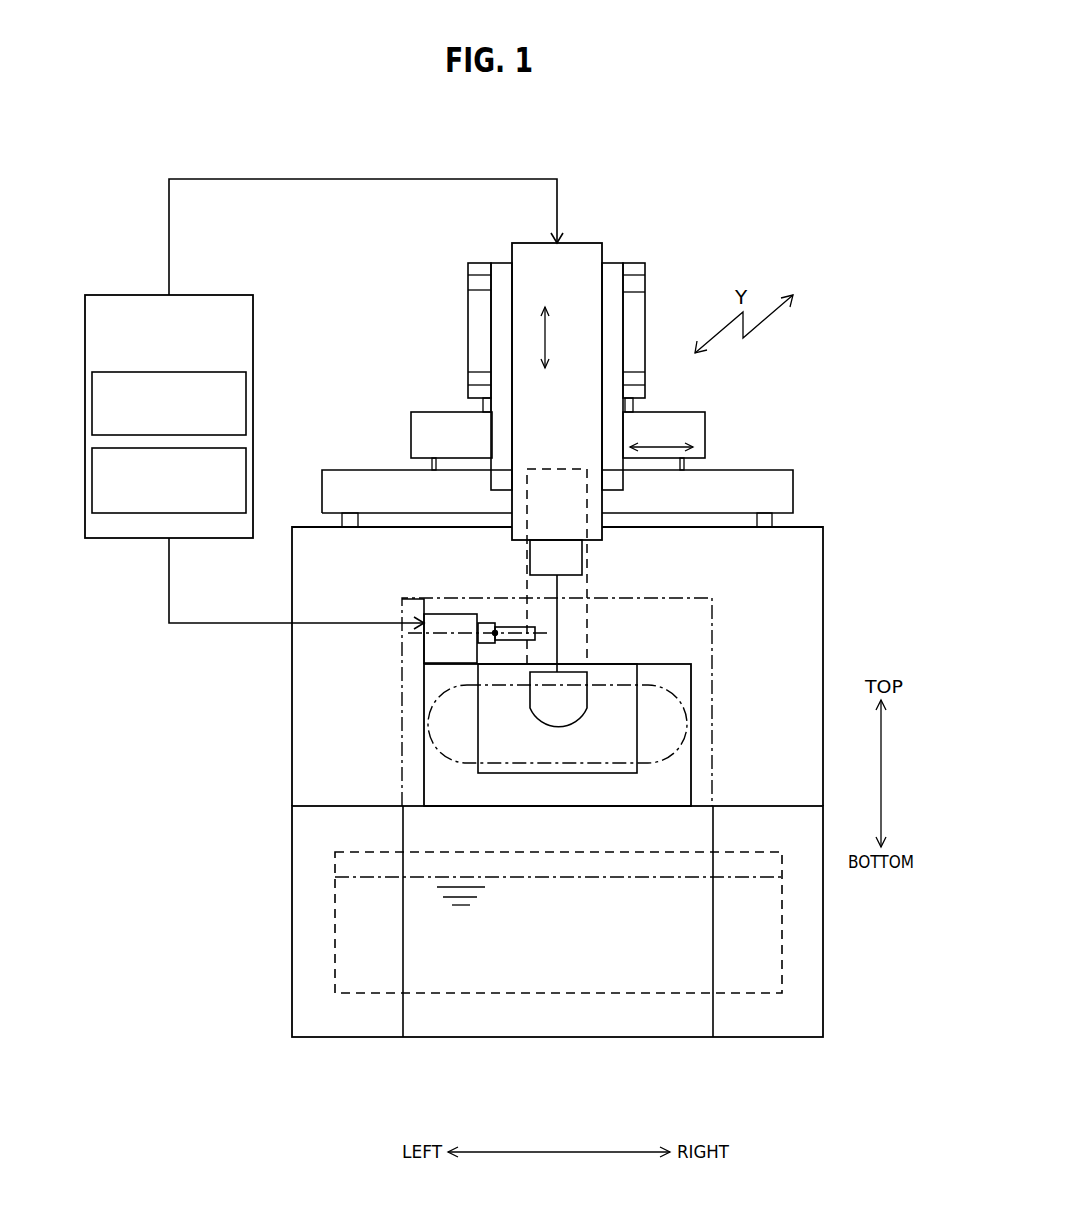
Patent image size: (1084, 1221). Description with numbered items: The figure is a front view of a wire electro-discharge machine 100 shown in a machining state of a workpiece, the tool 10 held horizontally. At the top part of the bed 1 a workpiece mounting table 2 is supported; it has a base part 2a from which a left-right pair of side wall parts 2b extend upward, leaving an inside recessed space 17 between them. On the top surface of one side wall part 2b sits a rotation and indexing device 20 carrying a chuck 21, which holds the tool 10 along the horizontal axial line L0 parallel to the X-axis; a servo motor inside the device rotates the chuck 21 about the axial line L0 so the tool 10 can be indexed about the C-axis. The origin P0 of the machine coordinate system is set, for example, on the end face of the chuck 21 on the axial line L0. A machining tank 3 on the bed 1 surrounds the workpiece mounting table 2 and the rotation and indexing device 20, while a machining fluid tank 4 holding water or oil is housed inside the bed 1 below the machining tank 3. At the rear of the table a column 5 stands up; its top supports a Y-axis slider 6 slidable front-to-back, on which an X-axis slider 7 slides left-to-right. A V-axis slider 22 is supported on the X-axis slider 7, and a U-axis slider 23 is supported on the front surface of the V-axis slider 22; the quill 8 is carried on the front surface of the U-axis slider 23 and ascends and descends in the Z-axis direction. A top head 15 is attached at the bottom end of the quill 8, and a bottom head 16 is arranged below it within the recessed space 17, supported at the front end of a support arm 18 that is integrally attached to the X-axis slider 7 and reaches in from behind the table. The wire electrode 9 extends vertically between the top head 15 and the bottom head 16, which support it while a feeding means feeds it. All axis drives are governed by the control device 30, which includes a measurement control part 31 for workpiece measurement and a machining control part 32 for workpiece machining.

The wire electro-discharge machine 100 is at (785, 173).
The bed 1 is at (713, 1020).
The workpiece mounting table 2 is at (692, 777).
The base part 2a is at (528, 791).
The side wall parts 2b is at (424, 743).
The machining tank 3 is at (402, 612).
The machining fluid tank 4 is at (782, 942).
The column 5 is at (823, 590).
The Y-axis slider 6 is at (793, 480).
The X-axis slider 7 is at (705, 422).
The quill 8 is at (602, 253).
The wire electrode 9 is at (557, 613).
The tool 10 is at (508, 623).
The top head 15 is at (572, 558).
The bottom head 16 is at (570, 685).
The recessed space 17 is at (615, 708).
The support arm 18 is at (527, 558).
The rotation and indexing device 20 is at (423, 614).
The chuck 21 is at (480, 623).
The V-axis slider 22 is at (632, 322).
The U-axis slider 23 is at (503, 322).
The control device 30 is at (107, 539).
The measurement control part 31 is at (246, 405).
The machining control part 32 is at (246, 485).
The axial line L0 is at (413, 636).
The origin P0 is at (493, 634).